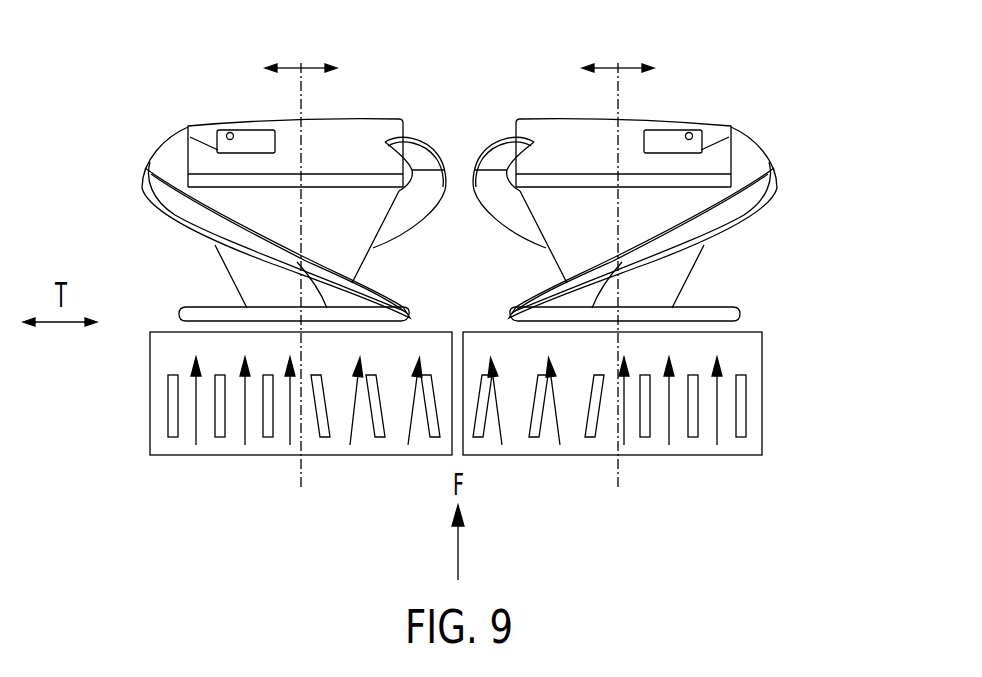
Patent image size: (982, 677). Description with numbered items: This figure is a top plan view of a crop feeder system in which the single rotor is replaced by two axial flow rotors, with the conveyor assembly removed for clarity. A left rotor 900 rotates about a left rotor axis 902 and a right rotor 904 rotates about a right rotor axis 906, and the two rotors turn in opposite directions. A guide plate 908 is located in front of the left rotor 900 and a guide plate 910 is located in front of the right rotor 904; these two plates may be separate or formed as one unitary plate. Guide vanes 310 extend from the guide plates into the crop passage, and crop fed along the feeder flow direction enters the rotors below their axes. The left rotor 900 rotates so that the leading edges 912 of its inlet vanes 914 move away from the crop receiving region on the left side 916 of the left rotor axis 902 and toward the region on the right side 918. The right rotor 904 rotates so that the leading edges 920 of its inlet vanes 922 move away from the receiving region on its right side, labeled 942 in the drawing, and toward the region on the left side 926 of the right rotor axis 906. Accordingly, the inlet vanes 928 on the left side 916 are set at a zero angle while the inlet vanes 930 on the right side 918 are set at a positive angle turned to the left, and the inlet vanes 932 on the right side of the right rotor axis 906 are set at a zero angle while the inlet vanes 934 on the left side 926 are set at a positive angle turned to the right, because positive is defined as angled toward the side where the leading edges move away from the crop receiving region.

The left rotor 900 is at (190, 142).
The left rotor axis 902 is at (296, 112).
The right rotor 904 is at (718, 148).
The right rotor axis 906 is at (614, 112).
The guide plate 908 is at (153, 415).
The guide plate 910 is at (755, 432).
The leading edges 912 is at (210, 320).
The inlet vanes 914 is at (180, 205).
The left side 916 is at (272, 52).
The right side 918 is at (327, 52).
The leading edges 920 is at (695, 308).
The inlet vanes 922 is at (735, 212).
The left side 926 is at (606, 52).
The fourth rotation direction 942 is at (627, 52).
The inlet vanes 928 is at (173, 437).
The inlet vanes 930 is at (325, 437).
The inlet vanes 932 is at (645, 437).
The inlet vanes 934 is at (477, 437).
The guide vanes 310 is at (720, 392).